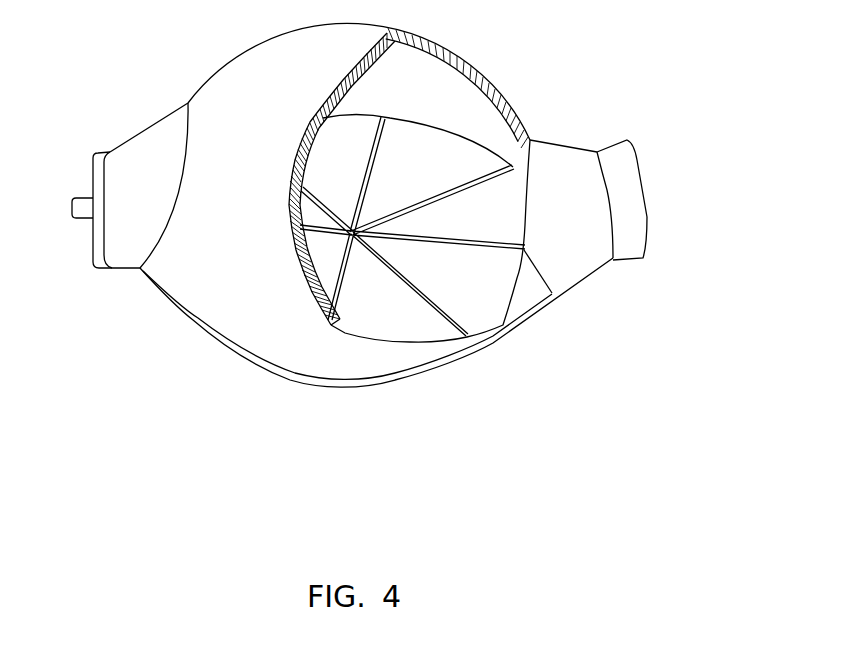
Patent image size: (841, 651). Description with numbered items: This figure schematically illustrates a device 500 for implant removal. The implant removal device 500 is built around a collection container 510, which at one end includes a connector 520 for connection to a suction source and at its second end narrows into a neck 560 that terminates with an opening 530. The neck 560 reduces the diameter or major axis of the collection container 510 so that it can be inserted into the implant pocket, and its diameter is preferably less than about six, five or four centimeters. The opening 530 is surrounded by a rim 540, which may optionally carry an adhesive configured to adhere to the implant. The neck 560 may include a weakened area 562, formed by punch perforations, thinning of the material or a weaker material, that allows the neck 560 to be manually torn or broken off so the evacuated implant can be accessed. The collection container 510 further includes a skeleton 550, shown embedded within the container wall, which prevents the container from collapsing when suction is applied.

The implant removal device 500 is at (465, 45).
The collection container 510 is at (208, 280).
The connector 520 is at (82, 200).
The opening 530 is at (647, 213).
The rim 540 is at (637, 162).
The skeleton 550 is at (339, 285).
The neck 560 is at (560, 177).
The weakened area 562 is at (528, 258).